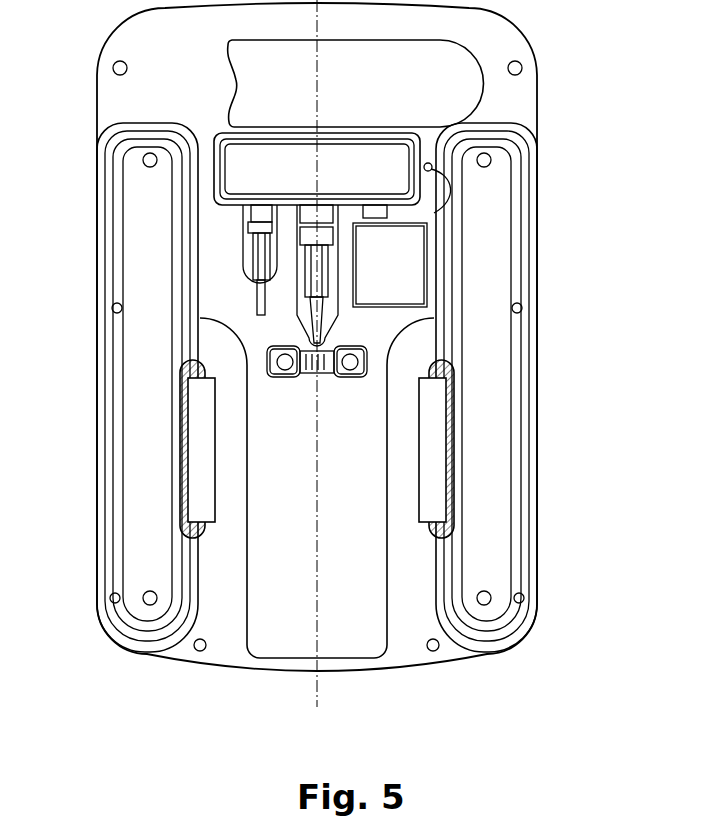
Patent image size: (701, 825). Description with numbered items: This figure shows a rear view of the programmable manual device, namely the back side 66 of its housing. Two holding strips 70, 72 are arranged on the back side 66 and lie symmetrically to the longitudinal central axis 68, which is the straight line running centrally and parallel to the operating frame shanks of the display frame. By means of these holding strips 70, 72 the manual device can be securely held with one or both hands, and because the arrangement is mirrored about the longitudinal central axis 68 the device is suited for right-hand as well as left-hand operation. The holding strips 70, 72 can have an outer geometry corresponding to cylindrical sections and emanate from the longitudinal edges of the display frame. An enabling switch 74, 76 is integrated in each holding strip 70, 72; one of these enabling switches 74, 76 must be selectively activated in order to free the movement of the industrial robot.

The back side 66 is at (518, 97).
The longitudinal central axis 68 is at (317, 98).
The holding strip 70 is at (117, 461).
The holding strip 72 is at (518, 462).
The enabling switch 74 is at (207, 460).
The enabling switch 76 is at (426, 461).